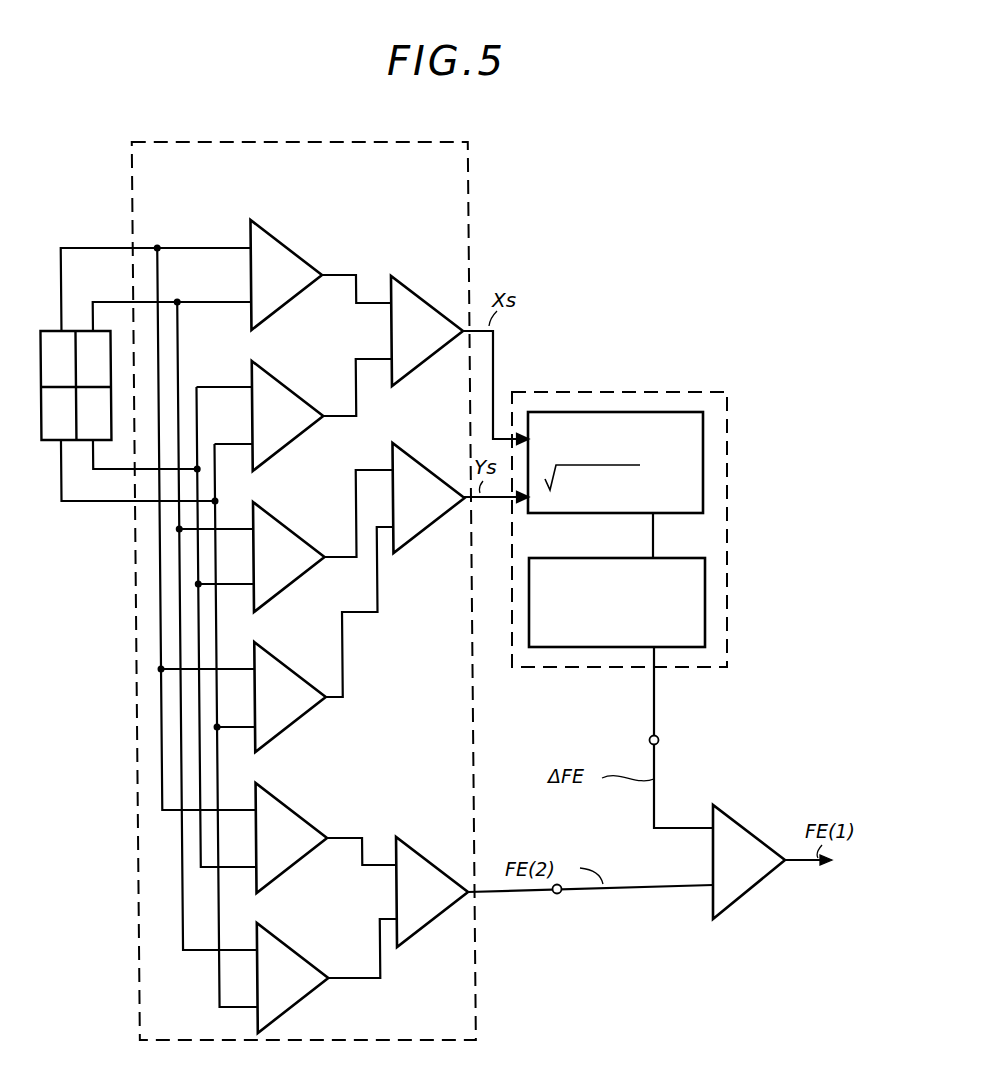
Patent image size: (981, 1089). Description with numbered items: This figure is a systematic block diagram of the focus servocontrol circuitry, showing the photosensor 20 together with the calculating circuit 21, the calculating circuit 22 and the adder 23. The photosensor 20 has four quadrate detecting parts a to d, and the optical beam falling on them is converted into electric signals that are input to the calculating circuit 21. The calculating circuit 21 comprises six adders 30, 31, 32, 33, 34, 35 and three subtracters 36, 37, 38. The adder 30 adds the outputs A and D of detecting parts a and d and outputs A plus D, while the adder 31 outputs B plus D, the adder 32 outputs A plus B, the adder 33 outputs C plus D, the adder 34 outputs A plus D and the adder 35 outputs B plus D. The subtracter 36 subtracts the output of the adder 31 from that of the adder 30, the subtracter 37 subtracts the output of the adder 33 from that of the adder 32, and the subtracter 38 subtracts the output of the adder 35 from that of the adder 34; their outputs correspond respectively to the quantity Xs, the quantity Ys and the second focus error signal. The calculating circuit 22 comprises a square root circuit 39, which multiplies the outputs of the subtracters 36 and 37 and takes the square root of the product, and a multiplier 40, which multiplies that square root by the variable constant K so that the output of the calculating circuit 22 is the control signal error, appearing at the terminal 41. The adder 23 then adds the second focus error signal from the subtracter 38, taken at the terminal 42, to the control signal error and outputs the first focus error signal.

The photosensor 20 is at (48, 331).
The calculating circuit 21 is at (472, 198).
The calculating circuit 22 is at (658, 393).
The adder 23 is at (757, 832).
The adder 30 is at (300, 249).
The adder 31 is at (300, 393).
The adder 32 is at (298, 527).
The adder 33 is at (300, 673).
The adder 34 is at (318, 799).
The adder 35 is at (305, 953).
The subtracter 36 is at (433, 297).
The subtracter 37 is at (443, 441).
The subtracter 38 is at (440, 861).
The square root circuit 39 is at (668, 514).
The multiplier 40 is at (547, 558).
The terminal for ΔFE 41 is at (659, 741).
The terminal for FE(2) 42 is at (558, 895).